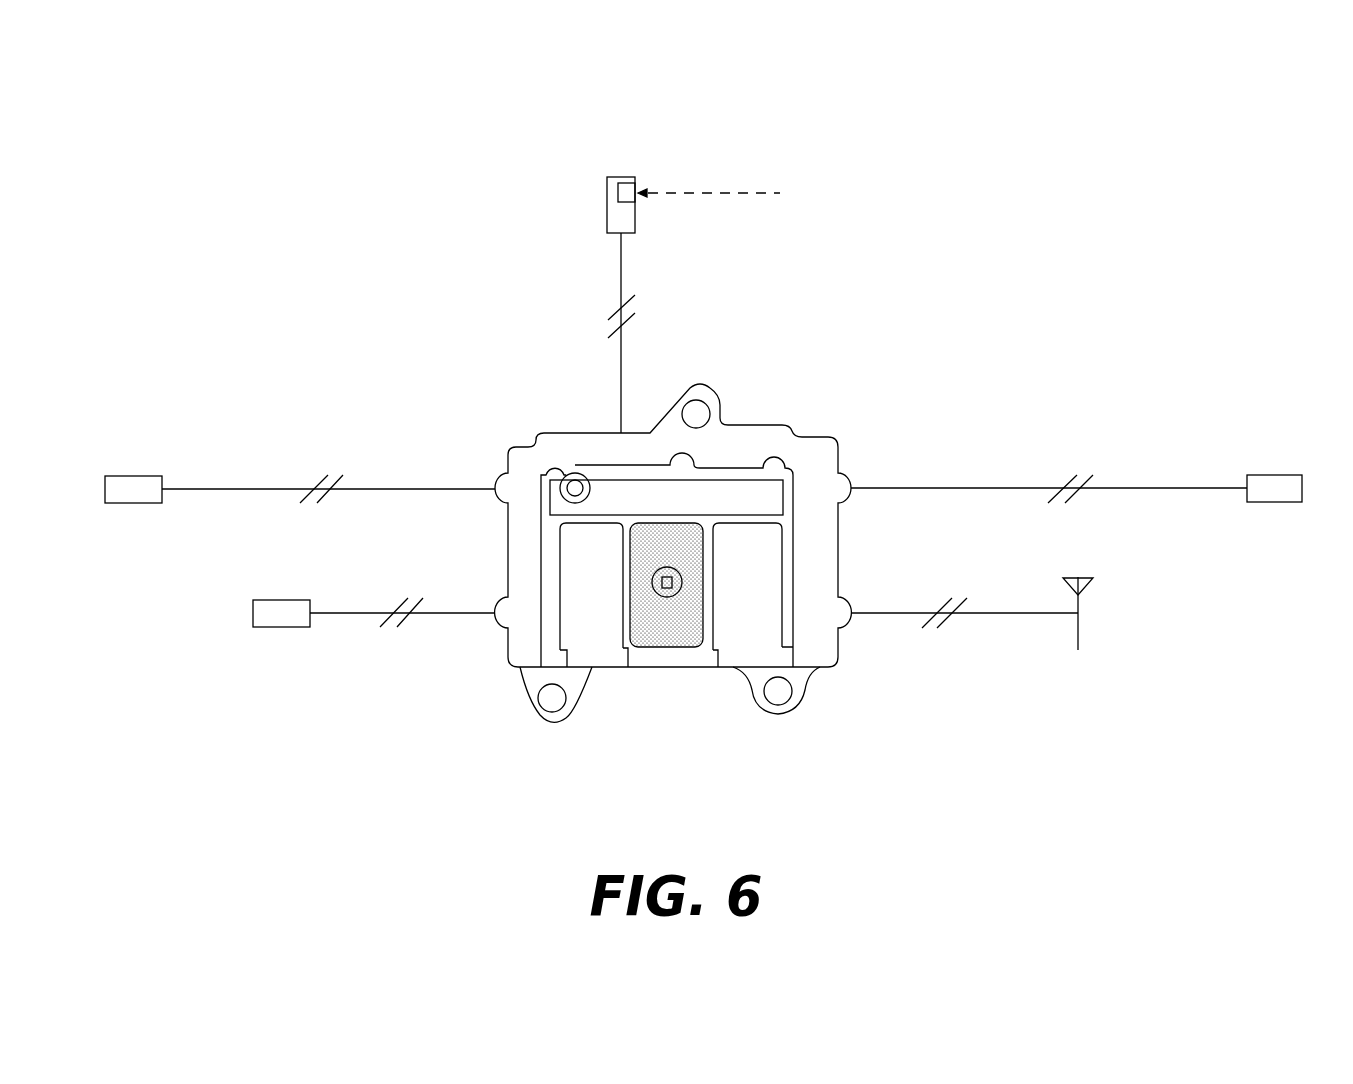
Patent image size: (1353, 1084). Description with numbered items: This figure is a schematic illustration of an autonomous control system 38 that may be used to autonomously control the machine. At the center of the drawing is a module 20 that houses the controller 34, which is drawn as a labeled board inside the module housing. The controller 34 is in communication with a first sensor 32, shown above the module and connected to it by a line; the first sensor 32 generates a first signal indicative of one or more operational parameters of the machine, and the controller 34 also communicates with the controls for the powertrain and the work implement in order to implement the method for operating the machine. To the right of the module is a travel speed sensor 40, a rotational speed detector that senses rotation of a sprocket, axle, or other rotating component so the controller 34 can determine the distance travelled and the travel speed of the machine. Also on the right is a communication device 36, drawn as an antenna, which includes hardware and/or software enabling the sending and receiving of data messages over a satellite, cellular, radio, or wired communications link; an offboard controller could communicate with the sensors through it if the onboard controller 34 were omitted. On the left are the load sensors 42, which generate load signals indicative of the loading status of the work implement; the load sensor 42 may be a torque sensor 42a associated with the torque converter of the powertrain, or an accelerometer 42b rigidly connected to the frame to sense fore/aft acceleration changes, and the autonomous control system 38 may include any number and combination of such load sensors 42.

The electronic control module 20 is at (838, 453).
The first sensor 32 is at (615, 177).
The controller 34 is at (680, 509).
The communication device 36 is at (1078, 605).
The autonomous control system 38 is at (1114, 180).
The travel speed sensor 40 is at (1275, 503).
The load sensor 42 is at (130, 705).
The torque sensor 42a is at (138, 503).
The accelerometer 42b is at (290, 628).